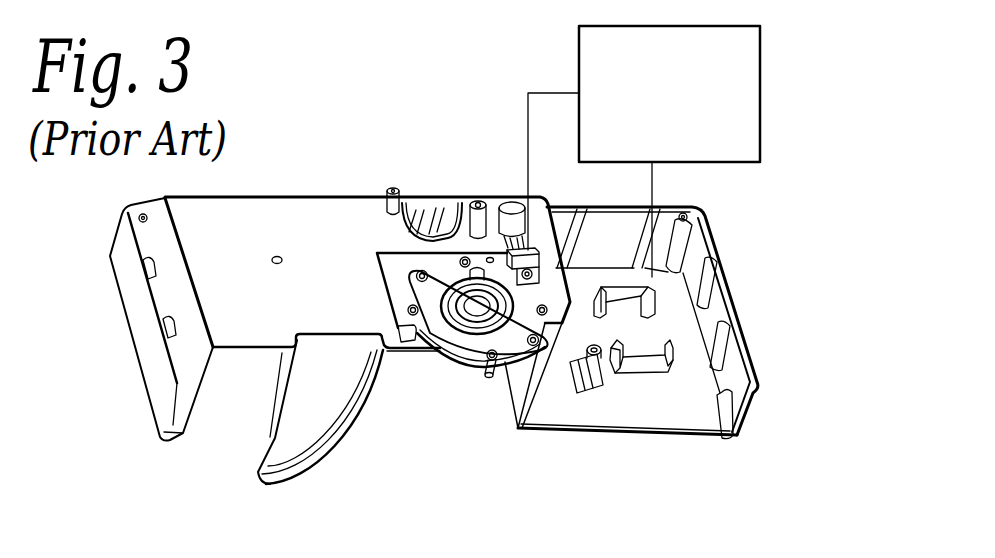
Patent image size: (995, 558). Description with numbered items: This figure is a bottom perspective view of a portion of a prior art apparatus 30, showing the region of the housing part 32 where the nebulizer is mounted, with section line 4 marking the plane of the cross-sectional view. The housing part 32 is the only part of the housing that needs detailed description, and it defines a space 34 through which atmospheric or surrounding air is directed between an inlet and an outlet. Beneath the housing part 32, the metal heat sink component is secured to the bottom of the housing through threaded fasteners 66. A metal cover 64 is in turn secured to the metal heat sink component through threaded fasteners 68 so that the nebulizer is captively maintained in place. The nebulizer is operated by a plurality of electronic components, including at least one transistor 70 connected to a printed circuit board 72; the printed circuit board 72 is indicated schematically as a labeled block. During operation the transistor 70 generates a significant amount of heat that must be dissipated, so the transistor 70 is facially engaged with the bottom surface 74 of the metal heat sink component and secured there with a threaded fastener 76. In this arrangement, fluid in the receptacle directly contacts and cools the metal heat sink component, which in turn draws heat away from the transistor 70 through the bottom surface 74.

The apparatus 30 is at (803, 128).
The housing part 32 is at (711, 316).
The space 34 is at (410, 381).
The metal cover 64 is at (487, 307).
The threaded fasteners 66 is at (490, 364).
The threaded fasteners 68 is at (417, 271).
The transistor 70 is at (543, 272).
The printed circuit board 72 is at (677, 148).
The bottom surface 74 is at (543, 290).
The threaded fastener 76 is at (552, 290).
The section line 4- 4 is at (417, 137).